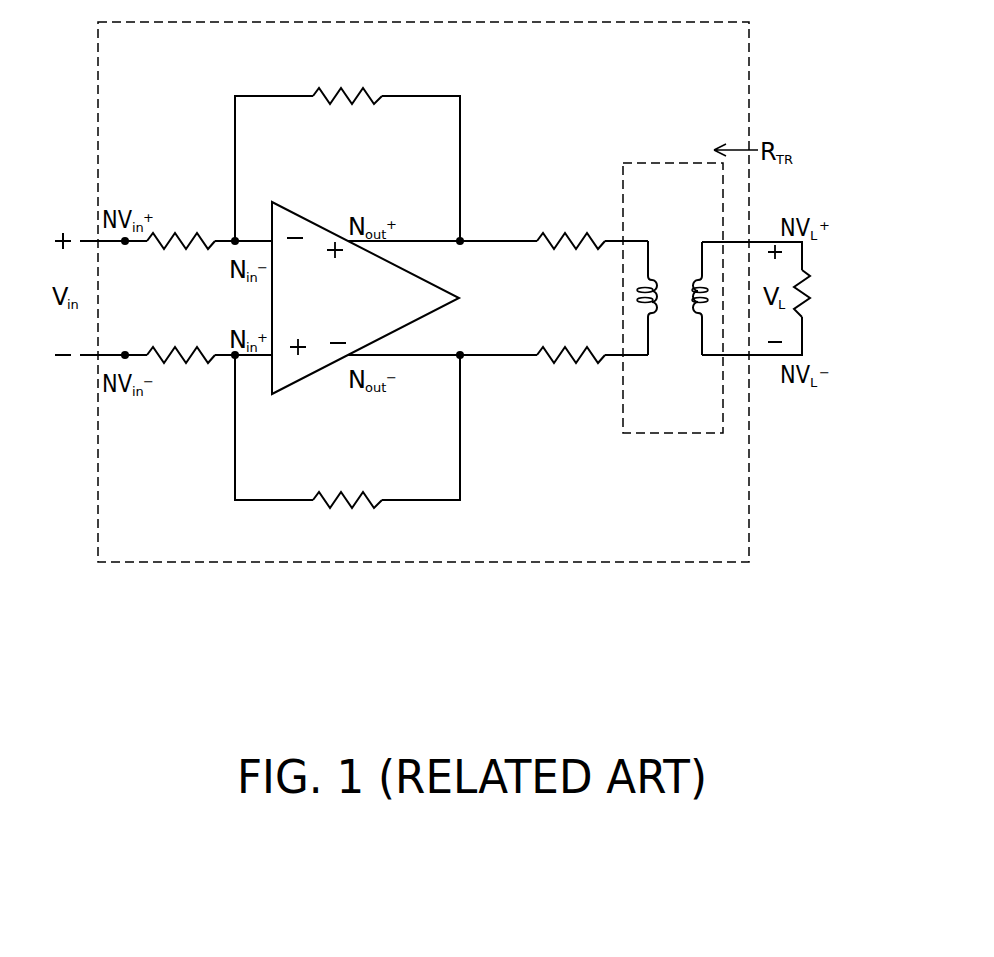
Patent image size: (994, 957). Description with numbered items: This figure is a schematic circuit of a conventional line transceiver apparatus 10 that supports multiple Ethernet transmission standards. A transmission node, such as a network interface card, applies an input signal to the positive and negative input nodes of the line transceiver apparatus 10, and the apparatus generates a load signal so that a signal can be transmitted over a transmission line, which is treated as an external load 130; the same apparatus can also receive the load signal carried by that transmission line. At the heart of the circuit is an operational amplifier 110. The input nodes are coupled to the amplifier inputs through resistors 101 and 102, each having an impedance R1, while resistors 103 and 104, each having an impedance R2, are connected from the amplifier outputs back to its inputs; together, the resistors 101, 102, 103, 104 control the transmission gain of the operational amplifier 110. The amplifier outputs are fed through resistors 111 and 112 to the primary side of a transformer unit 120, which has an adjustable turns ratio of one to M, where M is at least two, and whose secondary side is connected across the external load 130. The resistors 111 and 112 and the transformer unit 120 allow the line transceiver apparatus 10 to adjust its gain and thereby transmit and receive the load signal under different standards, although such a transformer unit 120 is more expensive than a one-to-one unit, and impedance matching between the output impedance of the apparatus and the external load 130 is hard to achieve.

The line transceiver apparatus 10 is at (462, 563).
The resistor 101 is at (185, 236).
The resistor 102 is at (178, 360).
The resistor 103 is at (350, 88).
The resistor 104 is at (345, 506).
The operational amplifier 110 is at (303, 214).
The resistor 111 is at (568, 234).
The resistor 112 is at (572, 360).
The transformer unit 120 is at (655, 162).
The external load 130 is at (808, 305).